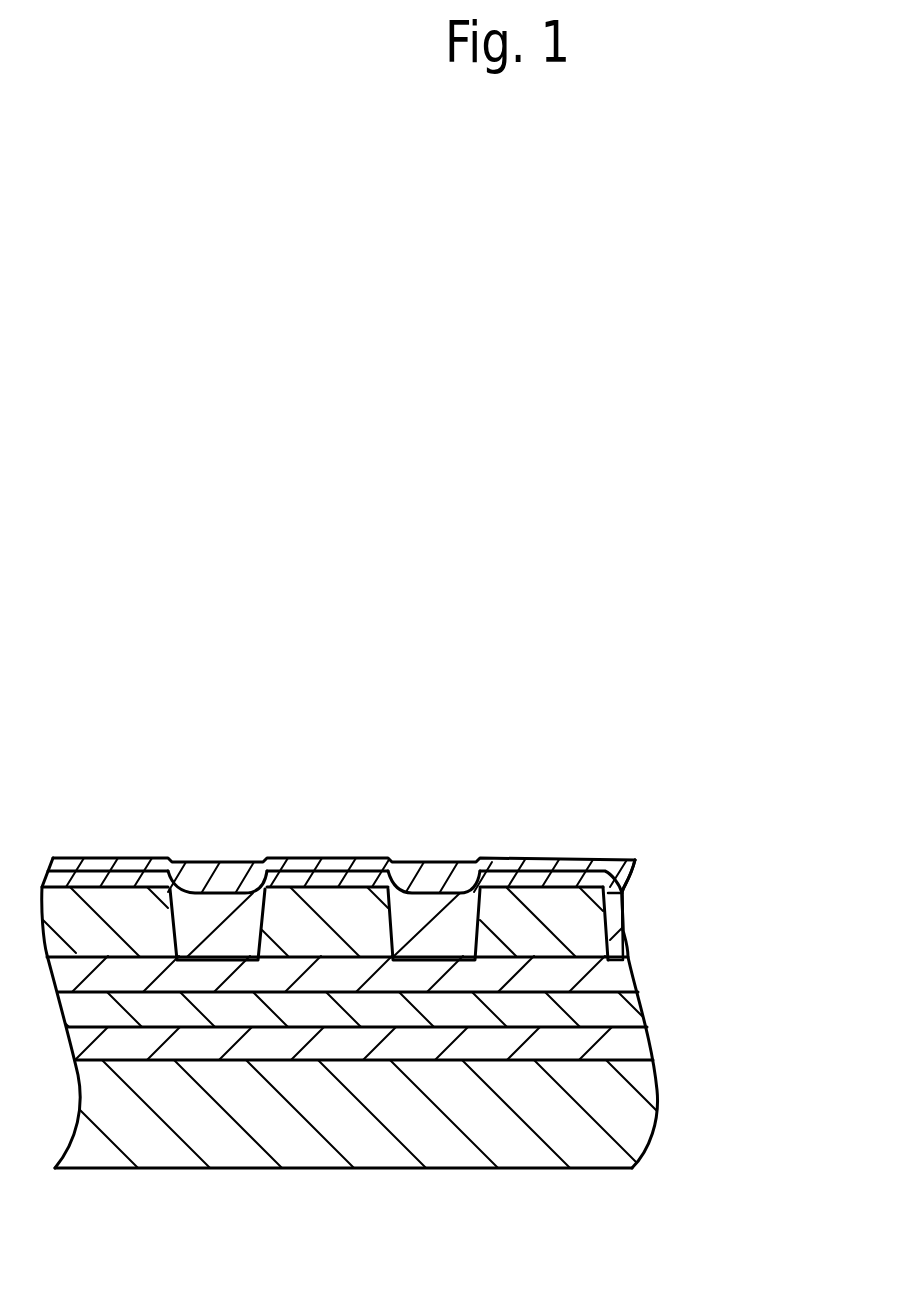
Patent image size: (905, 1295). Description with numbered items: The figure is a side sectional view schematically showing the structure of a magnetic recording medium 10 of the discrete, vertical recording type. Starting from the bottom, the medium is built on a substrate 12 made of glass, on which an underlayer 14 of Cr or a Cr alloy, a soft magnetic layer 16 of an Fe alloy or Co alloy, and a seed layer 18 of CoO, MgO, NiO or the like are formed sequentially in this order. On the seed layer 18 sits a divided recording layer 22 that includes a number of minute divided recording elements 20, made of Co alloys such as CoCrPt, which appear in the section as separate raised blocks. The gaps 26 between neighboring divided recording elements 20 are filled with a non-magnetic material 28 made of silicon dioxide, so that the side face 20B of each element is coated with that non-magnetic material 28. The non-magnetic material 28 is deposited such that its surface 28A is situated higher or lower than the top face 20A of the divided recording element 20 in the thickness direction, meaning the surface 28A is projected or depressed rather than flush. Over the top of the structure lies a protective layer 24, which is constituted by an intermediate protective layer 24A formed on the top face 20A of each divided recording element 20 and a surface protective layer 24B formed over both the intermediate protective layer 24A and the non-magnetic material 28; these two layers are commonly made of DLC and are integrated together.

The magnetic recording medium 10 is at (330, 560).
The substrate 12 is at (658, 1110).
The underlayer 14 is at (653, 1048).
The soft magnetic layer 16 is at (642, 1010).
The seed layer 18 is at (632, 973).
The divided recording element 20 is at (565, 910).
The top face 20A is at (553, 887).
The side face 20B is at (610, 897).
The divided recording layer 22 is at (650, 917).
The protective layer 24 is at (233, 615).
The intermediate protective layer 24A is at (133, 872).
The surface protective layer 24B is at (107, 858).
The gap 26 is at (263, 830).
The non-magnetic material 28 is at (220, 907).
The surface 28A is at (248, 885).